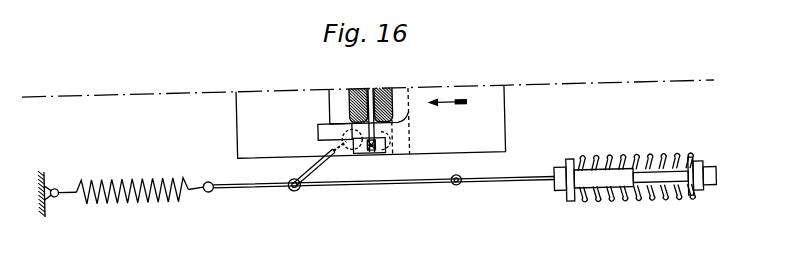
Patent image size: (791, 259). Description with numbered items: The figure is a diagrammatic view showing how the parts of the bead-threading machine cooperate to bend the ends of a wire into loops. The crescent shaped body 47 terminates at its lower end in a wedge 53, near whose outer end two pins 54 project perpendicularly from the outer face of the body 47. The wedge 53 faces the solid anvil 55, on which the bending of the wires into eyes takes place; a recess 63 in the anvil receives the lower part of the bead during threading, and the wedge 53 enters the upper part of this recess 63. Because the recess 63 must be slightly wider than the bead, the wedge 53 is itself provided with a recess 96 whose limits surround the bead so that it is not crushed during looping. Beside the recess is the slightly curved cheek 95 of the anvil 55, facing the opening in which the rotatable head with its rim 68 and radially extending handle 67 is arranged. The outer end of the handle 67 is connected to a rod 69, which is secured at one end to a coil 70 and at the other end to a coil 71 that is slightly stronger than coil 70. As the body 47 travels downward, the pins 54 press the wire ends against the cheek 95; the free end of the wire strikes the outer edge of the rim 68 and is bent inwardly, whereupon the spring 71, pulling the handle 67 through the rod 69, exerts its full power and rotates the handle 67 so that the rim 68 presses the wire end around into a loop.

The crescent shaped body 47 is at (457, 115).
The wedge 53 is at (405, 155).
The pins 54 is at (401, 149).
The anvil 55 is at (245, 112).
The recess 63 is at (330, 101).
The handle 67 is at (300, 190).
The rim 68 is at (346, 152).
The rod 69 is at (252, 186).
The coil 70 is at (126, 199).
The coil 71 is at (608, 203).
The cheek 95 is at (318, 128).
The recess 96 is at (398, 114).